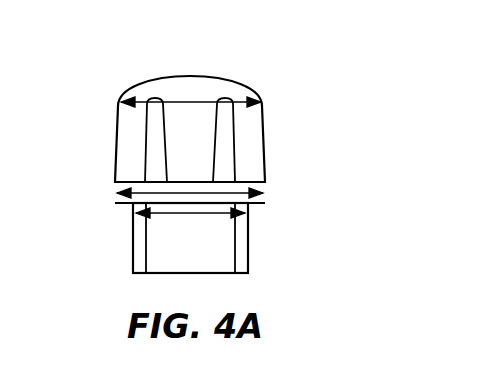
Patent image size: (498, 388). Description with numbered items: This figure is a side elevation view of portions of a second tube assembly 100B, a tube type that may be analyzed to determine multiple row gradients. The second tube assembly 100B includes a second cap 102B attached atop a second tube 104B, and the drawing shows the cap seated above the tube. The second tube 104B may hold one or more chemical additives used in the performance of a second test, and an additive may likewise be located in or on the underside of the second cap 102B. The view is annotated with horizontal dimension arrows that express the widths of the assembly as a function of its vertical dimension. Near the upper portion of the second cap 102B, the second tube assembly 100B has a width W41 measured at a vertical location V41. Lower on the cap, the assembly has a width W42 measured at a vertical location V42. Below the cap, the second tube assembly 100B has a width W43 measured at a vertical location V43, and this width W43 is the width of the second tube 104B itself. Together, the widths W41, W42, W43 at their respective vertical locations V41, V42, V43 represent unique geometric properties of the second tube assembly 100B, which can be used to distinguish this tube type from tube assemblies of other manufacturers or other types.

The second tube assembly 100B is at (190, 143).
The second cap 102B is at (118, 123).
The second tube 104B is at (133, 238).
The width W41 is at (178, 101).
The width W42 is at (188, 193).
The width W43 is at (207, 213).
The vertical location V41 is at (264, 101).
The vertical location V42 is at (267, 193).
The vertical location V43 is at (250, 213).